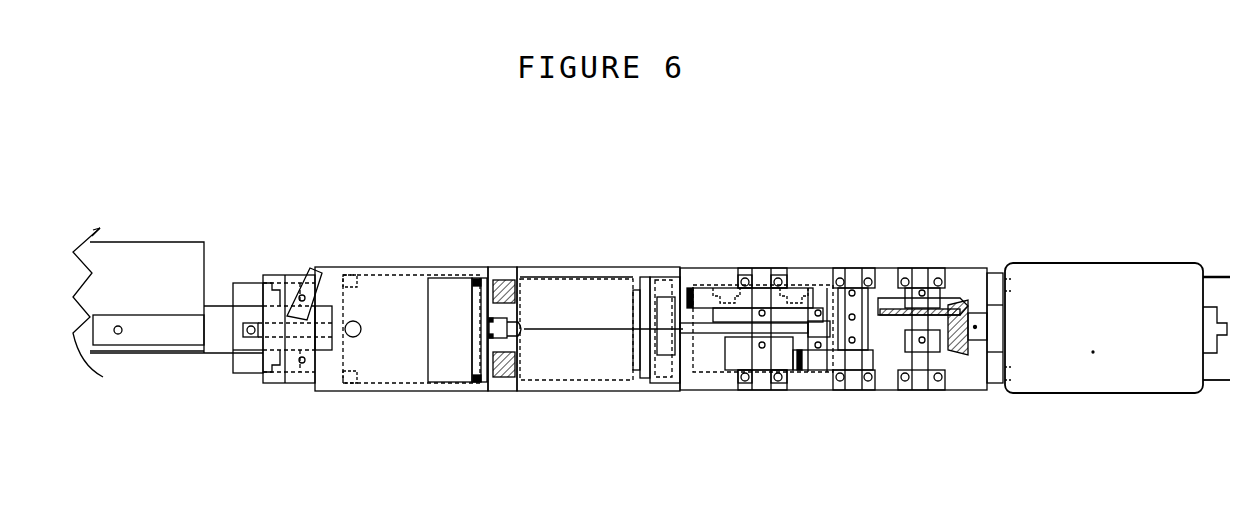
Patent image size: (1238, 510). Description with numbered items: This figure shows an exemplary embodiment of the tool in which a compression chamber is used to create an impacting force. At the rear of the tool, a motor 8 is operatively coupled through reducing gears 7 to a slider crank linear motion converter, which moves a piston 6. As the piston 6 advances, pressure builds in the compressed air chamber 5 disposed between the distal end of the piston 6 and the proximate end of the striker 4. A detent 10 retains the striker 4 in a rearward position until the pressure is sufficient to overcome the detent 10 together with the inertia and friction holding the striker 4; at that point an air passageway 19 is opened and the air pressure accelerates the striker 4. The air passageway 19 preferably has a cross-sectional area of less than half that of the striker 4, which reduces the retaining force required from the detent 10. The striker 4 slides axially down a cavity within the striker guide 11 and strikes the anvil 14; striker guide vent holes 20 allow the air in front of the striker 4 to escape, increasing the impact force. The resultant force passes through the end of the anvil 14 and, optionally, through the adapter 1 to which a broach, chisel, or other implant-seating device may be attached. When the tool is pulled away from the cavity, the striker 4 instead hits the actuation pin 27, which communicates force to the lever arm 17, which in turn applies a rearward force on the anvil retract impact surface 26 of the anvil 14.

The adapter 1 is at (157, 293).
The anvil 14 is at (213, 308).
The anvil retract impact surface 26 is at (303, 342).
The lever arm 17 is at (300, 316).
The actuation pin 27 is at (348, 278).
The striker guide 11 is at (453, 270).
The striker guide vent holes 20 is at (352, 333).
The striker 4 is at (448, 357).
The detent 10 is at (508, 278).
The air passageway 19 is at (512, 318).
The compressed air chamber 5 is at (560, 312).
The piston 6 is at (672, 288).
The reducing gears 7 is at (975, 320).
The motor 8 is at (1017, 305).